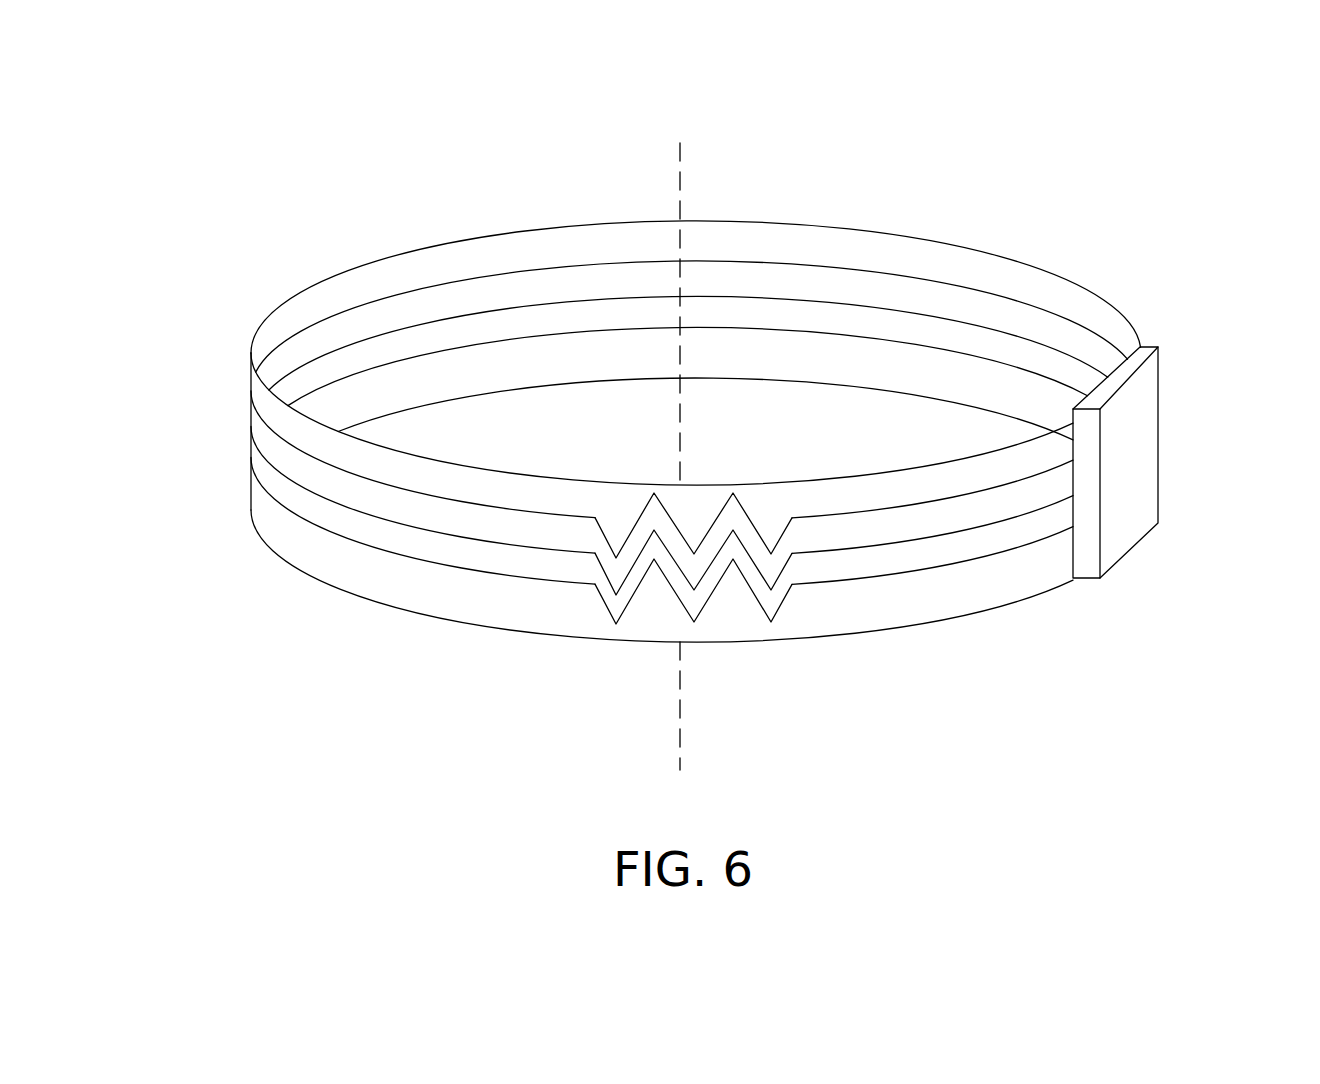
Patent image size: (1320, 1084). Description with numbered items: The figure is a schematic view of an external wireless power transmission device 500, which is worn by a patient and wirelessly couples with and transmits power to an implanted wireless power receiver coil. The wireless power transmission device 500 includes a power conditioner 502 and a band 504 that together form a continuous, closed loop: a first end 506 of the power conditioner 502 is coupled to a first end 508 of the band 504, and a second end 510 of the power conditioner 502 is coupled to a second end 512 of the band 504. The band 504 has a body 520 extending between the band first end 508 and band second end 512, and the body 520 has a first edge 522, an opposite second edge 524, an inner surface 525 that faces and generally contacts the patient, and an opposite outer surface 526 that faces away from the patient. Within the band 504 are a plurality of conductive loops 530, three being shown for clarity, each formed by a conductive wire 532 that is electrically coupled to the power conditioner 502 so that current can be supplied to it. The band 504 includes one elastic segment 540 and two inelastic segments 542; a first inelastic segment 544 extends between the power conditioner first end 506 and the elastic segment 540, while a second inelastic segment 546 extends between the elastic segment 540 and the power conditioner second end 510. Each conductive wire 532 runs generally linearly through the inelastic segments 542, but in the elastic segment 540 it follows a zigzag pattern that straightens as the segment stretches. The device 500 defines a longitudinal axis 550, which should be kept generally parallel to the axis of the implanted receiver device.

The wireless power transmission device 500 is at (915, 195).
The power conditioner 502 is at (1157, 432).
The band 504 is at (638, 233).
The first end of power conditioner 506 is at (1076, 437).
The first end of band 508 is at (1058, 447).
The second end of power conditioner 510 is at (1160, 348).
The second end of band 512 is at (1128, 340).
The body 520 is at (298, 307).
The first edge 522 is at (519, 476).
The second edge 524 is at (523, 634).
The inner surface 525 is at (493, 253).
The outer surface 526 is at (290, 423).
The conductive loop 530 is at (400, 290).
The conductive wire 532 is at (1072, 588).
The elastic segment 540 is at (787, 658).
The inelastic segment 542 is at (930, 593).
The first inelastic segment 544 is at (834, 468).
The second inelastic segment 546 is at (388, 433).
The longitudinal axis 550 is at (680, 193).